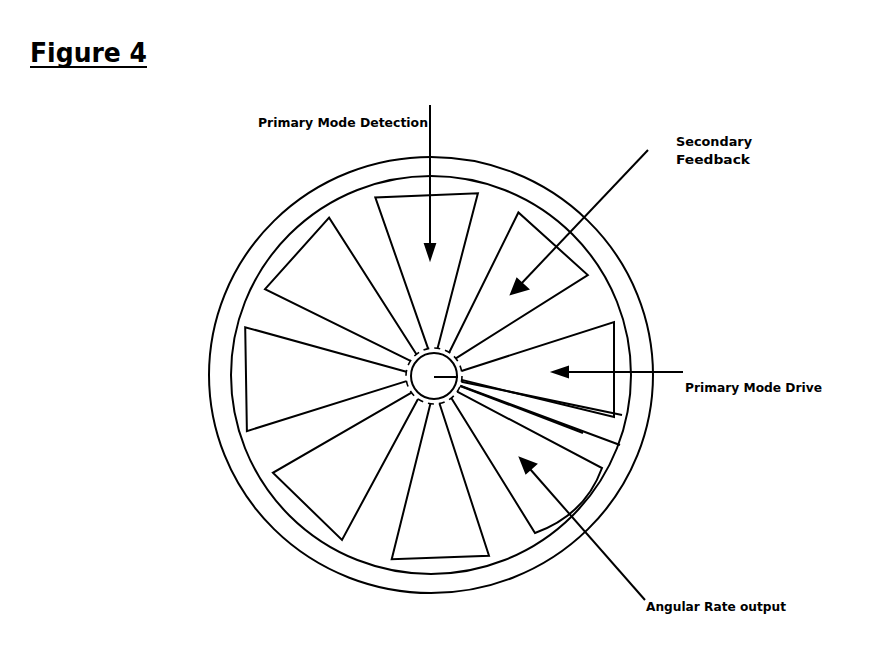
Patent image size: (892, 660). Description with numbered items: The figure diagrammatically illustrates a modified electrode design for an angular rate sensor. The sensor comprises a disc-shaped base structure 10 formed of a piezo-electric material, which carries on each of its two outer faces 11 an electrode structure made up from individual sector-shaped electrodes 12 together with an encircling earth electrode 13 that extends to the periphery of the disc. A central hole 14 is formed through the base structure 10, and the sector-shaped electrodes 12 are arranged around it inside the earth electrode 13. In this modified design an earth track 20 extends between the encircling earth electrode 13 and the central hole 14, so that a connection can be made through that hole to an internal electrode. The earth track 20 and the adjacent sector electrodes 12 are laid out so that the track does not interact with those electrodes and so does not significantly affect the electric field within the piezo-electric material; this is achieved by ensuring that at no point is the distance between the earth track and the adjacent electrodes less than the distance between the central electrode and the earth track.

The base structure 10 is at (495, 218).
The outer face 11 is at (598, 302).
The sector-shaped electrode 12 is at (310, 268).
The encircling earth electrode 13 is at (308, 543).
The central hole 14 is at (622, 415).
The earth track 20 is at (583, 433).